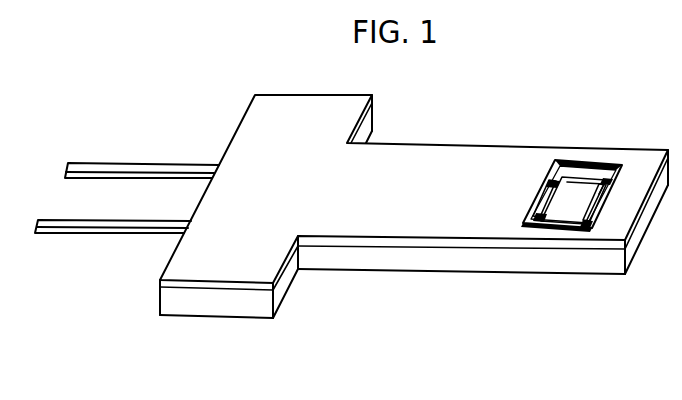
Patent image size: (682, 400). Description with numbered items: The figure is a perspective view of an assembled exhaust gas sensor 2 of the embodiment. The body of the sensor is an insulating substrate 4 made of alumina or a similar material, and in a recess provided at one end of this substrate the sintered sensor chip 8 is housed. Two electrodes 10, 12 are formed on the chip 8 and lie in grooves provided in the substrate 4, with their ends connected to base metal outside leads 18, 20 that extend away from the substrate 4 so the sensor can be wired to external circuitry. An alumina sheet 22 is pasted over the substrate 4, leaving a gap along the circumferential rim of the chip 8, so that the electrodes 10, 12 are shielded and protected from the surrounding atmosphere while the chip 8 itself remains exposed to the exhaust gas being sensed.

The exhaust gas sensor 2 is at (395, 389).
The insulating substrate 4 is at (540, 274).
The sensor chip 8 is at (593, 190).
The electrode 10 is at (561, 168).
The electrode 12 is at (588, 228).
The outside lead 18 is at (68, 165).
The outside lead 20 is at (52, 235).
The alumina sheet 22 is at (475, 248).